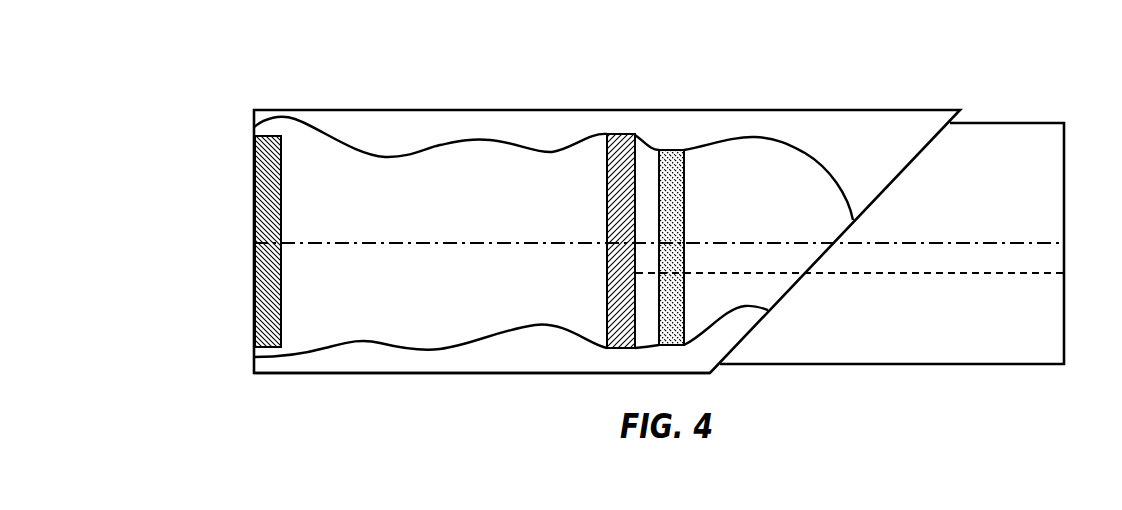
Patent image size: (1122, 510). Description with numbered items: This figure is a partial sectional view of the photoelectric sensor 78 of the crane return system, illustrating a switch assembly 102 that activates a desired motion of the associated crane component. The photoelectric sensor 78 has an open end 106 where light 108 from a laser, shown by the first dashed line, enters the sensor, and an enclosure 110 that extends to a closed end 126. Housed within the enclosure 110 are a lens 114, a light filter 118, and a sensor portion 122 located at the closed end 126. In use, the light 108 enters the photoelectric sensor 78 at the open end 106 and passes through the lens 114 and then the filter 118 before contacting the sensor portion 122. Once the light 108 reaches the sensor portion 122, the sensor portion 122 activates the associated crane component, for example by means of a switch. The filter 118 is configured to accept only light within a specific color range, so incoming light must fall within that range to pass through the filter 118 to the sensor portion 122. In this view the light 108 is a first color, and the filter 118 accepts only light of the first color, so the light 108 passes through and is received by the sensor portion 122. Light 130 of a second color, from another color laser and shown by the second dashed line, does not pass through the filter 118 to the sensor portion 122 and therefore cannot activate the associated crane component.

The photoelectric sensor 78 is at (805, 47).
The switch assembly 102 is at (403, 105).
The open end 106 is at (1065, 170).
The light 108 is at (927, 243).
The enclosure 110 is at (513, 362).
The lens 114 is at (682, 205).
The light filter 118 is at (623, 190).
The sensor portion 122 is at (267, 200).
The closed end 126 is at (253, 364).
The light of a second color 130 is at (1000, 275).